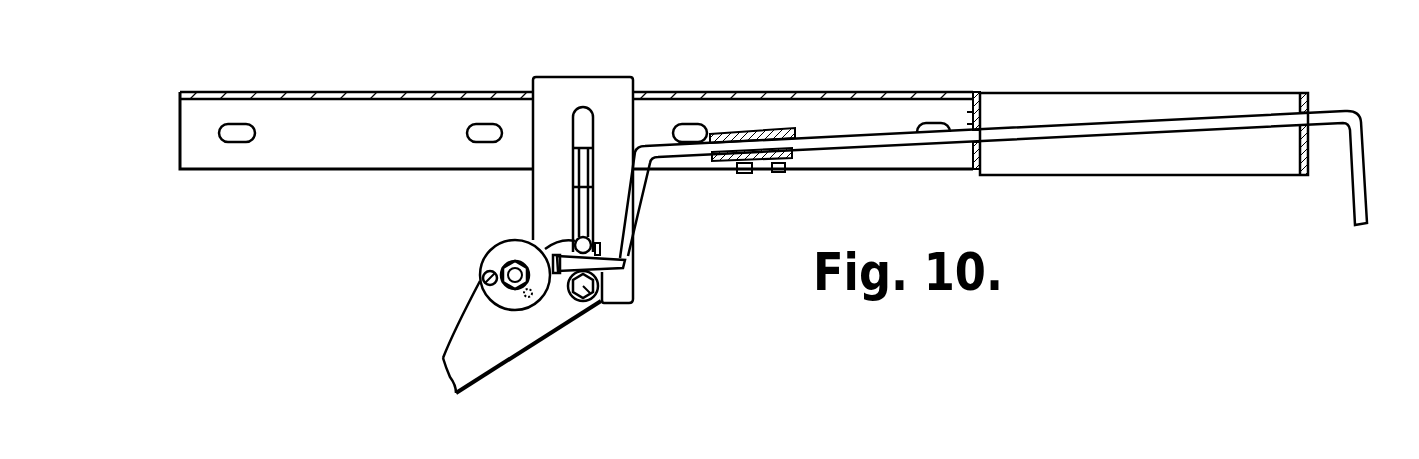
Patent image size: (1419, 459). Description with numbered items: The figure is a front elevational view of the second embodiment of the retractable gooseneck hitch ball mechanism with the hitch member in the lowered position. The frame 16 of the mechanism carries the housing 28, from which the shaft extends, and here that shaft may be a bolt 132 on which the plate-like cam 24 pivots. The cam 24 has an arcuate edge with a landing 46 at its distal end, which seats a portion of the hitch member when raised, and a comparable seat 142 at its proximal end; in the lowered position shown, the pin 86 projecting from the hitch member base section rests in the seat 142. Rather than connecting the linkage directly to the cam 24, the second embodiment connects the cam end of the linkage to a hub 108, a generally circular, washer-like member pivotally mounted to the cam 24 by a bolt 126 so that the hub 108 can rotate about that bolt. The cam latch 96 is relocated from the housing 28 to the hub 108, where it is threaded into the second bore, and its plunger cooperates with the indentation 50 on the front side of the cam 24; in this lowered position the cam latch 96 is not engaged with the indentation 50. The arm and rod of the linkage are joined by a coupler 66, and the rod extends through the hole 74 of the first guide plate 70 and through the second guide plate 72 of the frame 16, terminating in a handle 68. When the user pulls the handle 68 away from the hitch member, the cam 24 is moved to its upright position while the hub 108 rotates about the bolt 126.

The frame 16 is at (356, 104).
The housing 28 is at (610, 92).
The coupler 66 is at (766, 130).
The hole 74 is at (974, 118).
The first guide plate 70 is at (974, 160).
The second guide plate 72 is at (1312, 101).
The handle 68 is at (1359, 158).
The pin 86 is at (591, 244).
The seat 142 is at (606, 267).
The cam 24 is at (460, 330).
The landing 46 is at (449, 379).
The hub 108 is at (493, 252).
The bolt 126 is at (515, 262).
The cam latch 96 is at (479, 277).
The indentation 50 is at (529, 299).
The bolt 132 is at (602, 301).